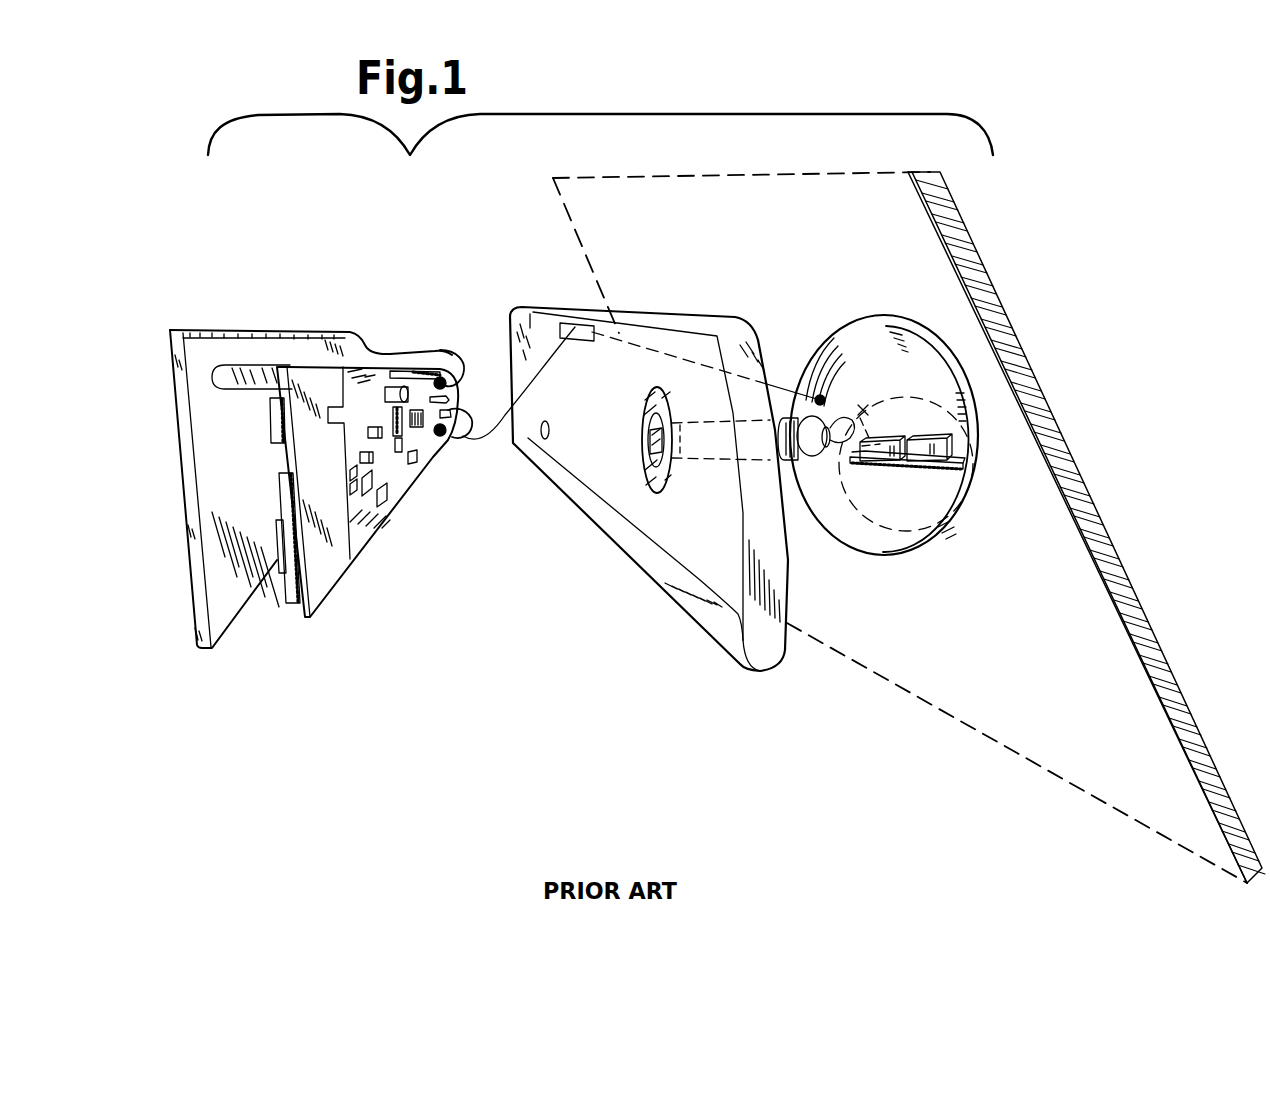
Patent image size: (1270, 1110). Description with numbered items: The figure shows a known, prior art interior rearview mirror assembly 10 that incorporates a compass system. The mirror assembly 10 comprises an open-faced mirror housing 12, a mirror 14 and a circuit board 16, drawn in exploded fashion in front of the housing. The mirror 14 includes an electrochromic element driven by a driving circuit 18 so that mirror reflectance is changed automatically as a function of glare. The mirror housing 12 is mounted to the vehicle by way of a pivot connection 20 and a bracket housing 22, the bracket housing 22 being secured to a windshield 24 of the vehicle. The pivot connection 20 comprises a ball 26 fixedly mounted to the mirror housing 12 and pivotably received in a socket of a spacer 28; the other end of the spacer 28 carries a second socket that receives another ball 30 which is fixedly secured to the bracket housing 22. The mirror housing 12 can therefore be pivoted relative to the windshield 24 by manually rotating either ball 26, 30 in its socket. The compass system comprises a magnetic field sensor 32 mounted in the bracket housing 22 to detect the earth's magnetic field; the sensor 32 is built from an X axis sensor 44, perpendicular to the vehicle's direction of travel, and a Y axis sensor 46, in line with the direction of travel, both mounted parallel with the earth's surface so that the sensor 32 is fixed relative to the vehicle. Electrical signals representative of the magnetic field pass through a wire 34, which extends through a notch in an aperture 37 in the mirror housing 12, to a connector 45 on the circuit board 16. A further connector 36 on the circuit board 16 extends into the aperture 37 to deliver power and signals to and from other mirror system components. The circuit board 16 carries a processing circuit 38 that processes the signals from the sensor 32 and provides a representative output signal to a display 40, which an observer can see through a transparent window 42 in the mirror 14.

The mirror assembly 10 is at (574, 598).
The mirror housing 12 is at (757, 672).
The mirror 14 is at (221, 636).
The circuit board 16 is at (358, 568).
The driving circuit 18 is at (423, 447).
The pivot connection 20 is at (783, 386).
The bracket housing 22 is at (951, 366).
The windshield 24 is at (1020, 662).
The ball 26 is at (701, 448).
The spacer 28 is at (750, 440).
The ball 30 is at (806, 445).
The magnetic field sensor 32 is at (913, 474).
The wire 34 is at (818, 396).
The connector 36 is at (422, 382).
The aperture 37 is at (570, 330).
The processing circuit 38 is at (382, 452).
The display 40 is at (272, 435).
The transparent window 42 is at (233, 377).
The X axis sensor 44 is at (879, 446).
The connector 45 is at (405, 396).
The Y axis sensor 46 is at (946, 450).